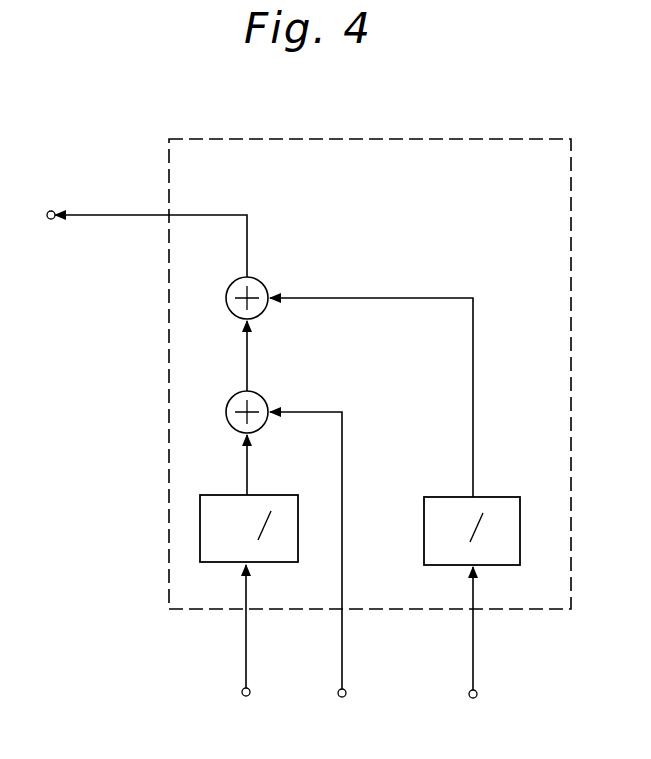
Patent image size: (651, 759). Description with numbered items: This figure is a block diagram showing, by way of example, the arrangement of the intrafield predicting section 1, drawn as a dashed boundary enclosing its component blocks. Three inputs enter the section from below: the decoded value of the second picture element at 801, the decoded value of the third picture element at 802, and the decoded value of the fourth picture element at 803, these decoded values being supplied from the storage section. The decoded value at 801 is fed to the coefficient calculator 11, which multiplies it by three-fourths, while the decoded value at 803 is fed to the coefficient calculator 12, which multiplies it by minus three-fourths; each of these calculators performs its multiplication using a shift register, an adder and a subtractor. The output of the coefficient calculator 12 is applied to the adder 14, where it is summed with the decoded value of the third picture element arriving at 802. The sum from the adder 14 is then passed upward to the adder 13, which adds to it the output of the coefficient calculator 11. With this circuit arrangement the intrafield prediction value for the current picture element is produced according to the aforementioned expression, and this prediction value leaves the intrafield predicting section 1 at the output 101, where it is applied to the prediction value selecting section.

The intrafield predicting section 1 is at (403, 140).
The coefficient calculator 11 is at (499, 497).
The coefficient calculator 12 is at (264, 496).
The adder 13 is at (261, 286).
The adder 14 is at (264, 401).
The prediction value output 101 is at (141, 231).
The decoded value X2 801 is at (482, 648).
The decoded value X3 802 is at (320, 569).
The decoded value X4 803 is at (256, 645).